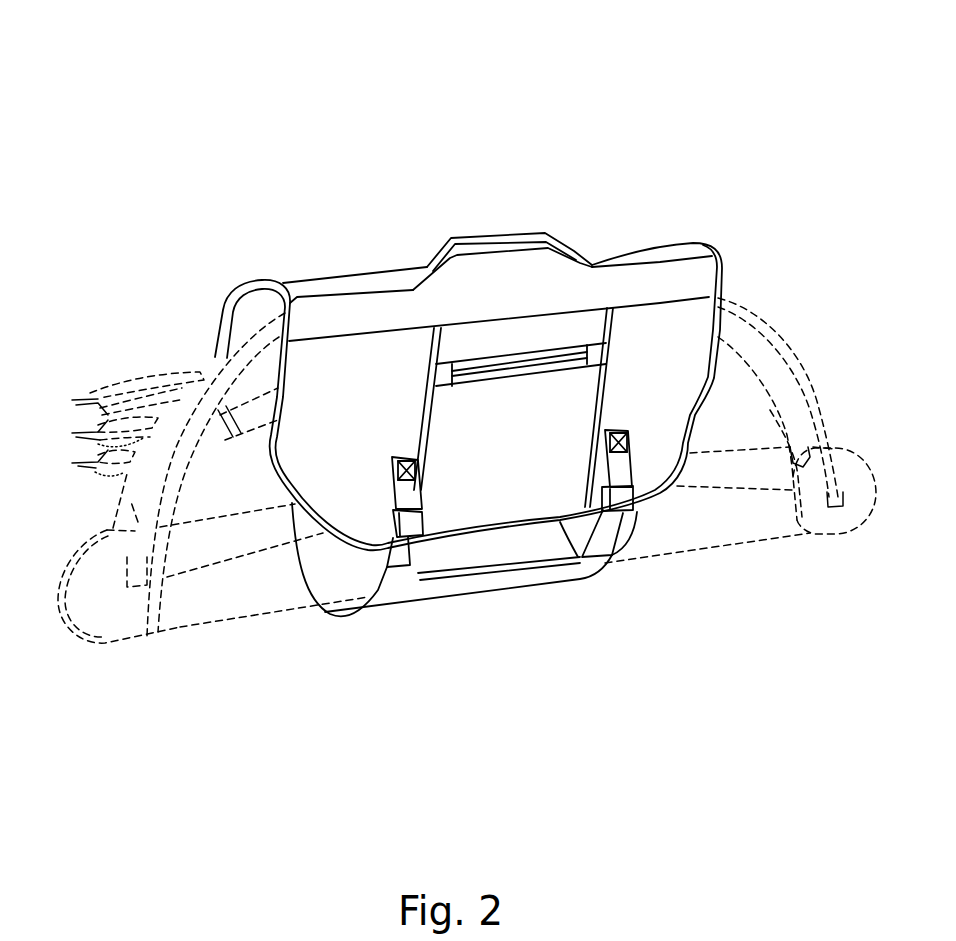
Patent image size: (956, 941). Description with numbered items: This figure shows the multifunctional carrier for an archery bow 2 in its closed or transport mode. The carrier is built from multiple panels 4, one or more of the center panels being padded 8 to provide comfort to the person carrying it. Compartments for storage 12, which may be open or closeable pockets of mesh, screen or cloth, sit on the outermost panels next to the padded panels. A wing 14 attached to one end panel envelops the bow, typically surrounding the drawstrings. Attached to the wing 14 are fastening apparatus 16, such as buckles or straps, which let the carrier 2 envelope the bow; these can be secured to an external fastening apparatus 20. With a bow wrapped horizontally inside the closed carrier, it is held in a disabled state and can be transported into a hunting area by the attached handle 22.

The multifunctional carrier for an archery bow 2 is at (258, 128).
The panels 4 is at (220, 306).
The padded center panel 8 is at (668, 277).
The compartments for storage 12 is at (533, 363).
The wing 14 is at (395, 590).
The fastening apparatus 16 is at (420, 530).
The external fastening apparatus 20 is at (405, 493).
The handle 22 is at (472, 248).